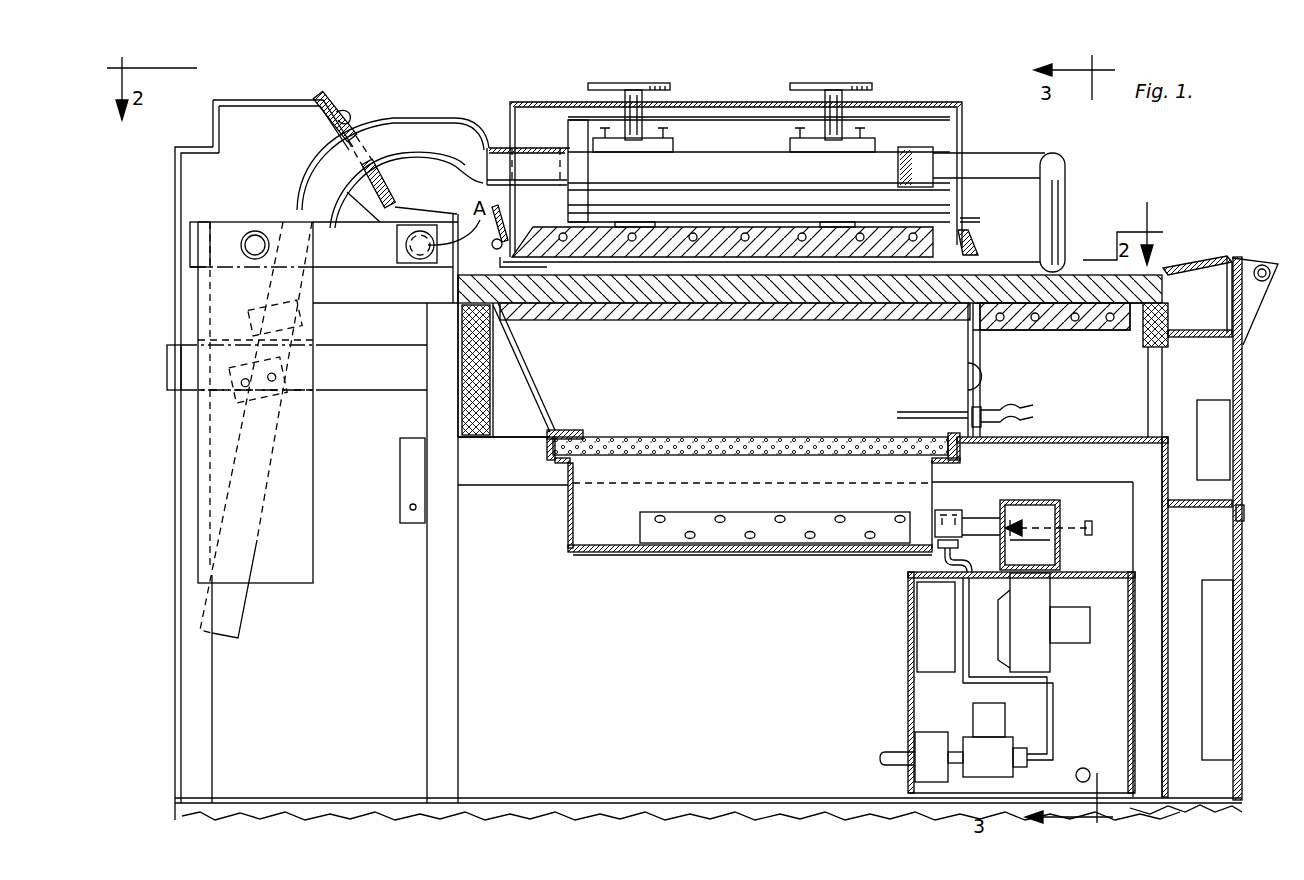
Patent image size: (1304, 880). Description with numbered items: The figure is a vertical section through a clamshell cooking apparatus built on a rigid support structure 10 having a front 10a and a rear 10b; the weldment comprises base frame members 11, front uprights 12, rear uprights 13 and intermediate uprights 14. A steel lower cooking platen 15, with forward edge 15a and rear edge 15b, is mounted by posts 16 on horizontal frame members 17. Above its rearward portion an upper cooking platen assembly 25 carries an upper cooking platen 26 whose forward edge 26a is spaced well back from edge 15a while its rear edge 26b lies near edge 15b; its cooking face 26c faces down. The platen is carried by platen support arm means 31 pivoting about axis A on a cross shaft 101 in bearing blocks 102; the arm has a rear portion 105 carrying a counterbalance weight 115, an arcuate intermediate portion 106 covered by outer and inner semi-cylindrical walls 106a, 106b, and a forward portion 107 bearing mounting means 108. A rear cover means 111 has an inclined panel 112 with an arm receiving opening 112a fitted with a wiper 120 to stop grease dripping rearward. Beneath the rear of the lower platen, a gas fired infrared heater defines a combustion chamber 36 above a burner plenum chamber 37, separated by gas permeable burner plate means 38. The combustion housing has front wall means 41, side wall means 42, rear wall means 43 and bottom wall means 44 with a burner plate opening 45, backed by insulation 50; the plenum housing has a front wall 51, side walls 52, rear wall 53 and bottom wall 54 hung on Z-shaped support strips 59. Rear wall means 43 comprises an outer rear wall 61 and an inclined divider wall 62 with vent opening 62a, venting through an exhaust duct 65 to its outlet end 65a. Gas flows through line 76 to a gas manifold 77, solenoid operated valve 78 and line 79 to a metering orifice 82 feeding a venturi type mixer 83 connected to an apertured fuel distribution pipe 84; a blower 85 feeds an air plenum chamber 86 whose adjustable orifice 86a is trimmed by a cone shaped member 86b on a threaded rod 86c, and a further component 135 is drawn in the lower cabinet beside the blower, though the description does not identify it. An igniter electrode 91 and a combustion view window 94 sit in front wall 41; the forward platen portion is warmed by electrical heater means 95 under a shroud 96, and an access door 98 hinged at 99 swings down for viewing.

The rigid support structure 10 is at (180, 492).
The front 10a is at (1243, 357).
The rear 10b is at (175, 195).
The base frame members 11 is at (668, 798).
The front uprights 12 is at (1175, 572).
The rear uprights 13 is at (200, 686).
The intermediate uprights 14 is at (455, 683).
The lower cooking platen 15 is at (1012, 287).
The forward edge of lower cooking platen 15a is at (1168, 262).
The rear edge of lower cooking platen 15b is at (458, 325).
The posts 16 is at (1148, 380).
The horizontal frame members 17 is at (1062, 443).
The upper cooking platen assembly 25 is at (970, 106).
The upper cooking platen 26 is at (702, 261).
The forward edge of upper cooking platen 26a is at (975, 243).
The rear edge of upper cooking platen 26b is at (500, 268).
The cooking face 26c is at (735, 306).
The platen support arm means 31 is at (538, 150).
The combustion chamber 36 is at (750, 384).
The burner plenum chamber 37 is at (771, 504).
The gas permeable burner plate means 38 is at (842, 440).
The front wall means 41 is at (965, 322).
The side wall means 42 is at (552, 476).
The rear wall means 43 is at (490, 357).
The bottom wall means 44 is at (502, 486).
The burner plate opening 45 is at (578, 430).
The insulation 50 is at (490, 400).
The front wall 51 is at (962, 462).
The side walls 52 is at (575, 553).
The rear wall 53 is at (570, 535).
The bottom wall 54 is at (585, 557).
The Z-shaped support strips 59 is at (568, 505).
The outer rear wall 61 is at (527, 405).
The divider wall 62 is at (535, 412).
The vent opening 62a is at (530, 383).
The exhaust duct 65 is at (368, 390).
The outlet end 65a is at (160, 375).
The line 76 is at (888, 750).
The gas manifold 77 is at (880, 760).
The solenoid operated valve 78 is at (985, 745).
The line 79 is at (1052, 690).
The metering orifice 82 is at (925, 535).
The venturi type mixer 83 is at (952, 510).
The apertured combustible fuel distribution pipe 84 is at (810, 520).
The blower 85 is at (1040, 604).
The air plenum chamber 86 is at (1050, 515).
The adjustable orifice 86a is at (1010, 530).
The cone shaped member 86b is at (1030, 545).
The threaded rod 86c is at (1060, 523).
The igniter electrode 91 is at (912, 412).
The combustion view window 94 is at (980, 378).
The electrical heater means 95 is at (1068, 322).
The shroud 96 is at (1028, 328).
The access door 98 is at (1242, 384).
The hinge 99 is at (1240, 515).
The cross shaft 101 is at (425, 224).
The bearing blocks 102 is at (422, 288).
The rear portion 105 is at (340, 253).
The arcuate intermediate portion 106 is at (390, 125).
The outer semi-cylindrical wall 106a is at (428, 117).
The inner semi-cylindrical wall 106b is at (455, 160).
The forward portion 107 is at (680, 157).
The mounting means 108 is at (664, 122).
The rear cover means 111 is at (270, 99).
The panel 112 is at (338, 112).
The arm receiving opening 112a is at (330, 165).
The counterbalance weight 115 is at (290, 575).
The wiper 120 is at (336, 122).
The transformer 135 is at (922, 622).